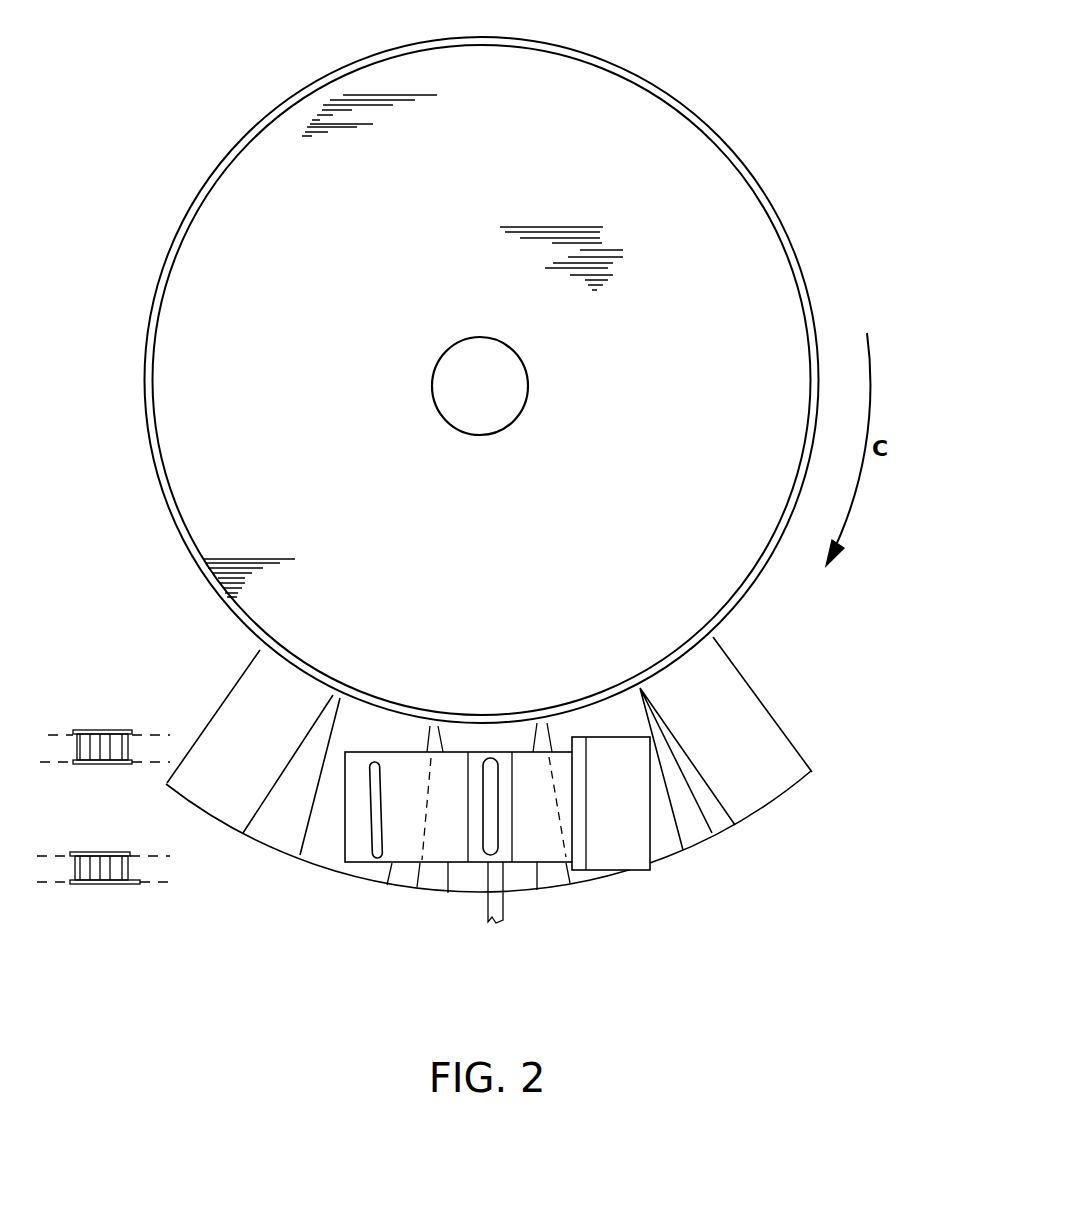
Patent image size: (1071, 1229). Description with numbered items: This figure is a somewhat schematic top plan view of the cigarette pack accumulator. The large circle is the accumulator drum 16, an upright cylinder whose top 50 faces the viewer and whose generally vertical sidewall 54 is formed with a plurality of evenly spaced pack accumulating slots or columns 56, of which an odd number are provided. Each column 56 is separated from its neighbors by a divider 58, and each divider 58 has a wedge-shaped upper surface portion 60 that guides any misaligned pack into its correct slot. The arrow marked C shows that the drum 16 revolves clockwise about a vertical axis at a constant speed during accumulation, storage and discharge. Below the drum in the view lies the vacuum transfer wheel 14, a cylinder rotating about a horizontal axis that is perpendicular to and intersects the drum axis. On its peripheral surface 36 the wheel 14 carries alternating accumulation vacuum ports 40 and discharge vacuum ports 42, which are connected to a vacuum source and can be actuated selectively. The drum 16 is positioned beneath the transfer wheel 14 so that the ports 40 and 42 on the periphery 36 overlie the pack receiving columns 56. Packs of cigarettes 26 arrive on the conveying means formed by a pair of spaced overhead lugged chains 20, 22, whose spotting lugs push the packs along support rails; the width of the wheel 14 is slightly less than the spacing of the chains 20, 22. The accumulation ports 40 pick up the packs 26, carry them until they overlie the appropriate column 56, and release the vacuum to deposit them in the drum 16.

The accumulator drum 16 is at (660, 66).
The top 50 is at (687, 187).
The pack accumulating slots or columns 56 is at (246, 731).
The divider 58 is at (288, 855).
The wedge-shaped upper surface portion 60 is at (287, 810).
The vacuum transfer wheel 14 is at (378, 864).
The accumulation vacuum port 40 is at (372, 823).
The discharge vacuum port 42 is at (493, 827).
The peripheral surface 36 is at (543, 845).
The packs of cigarettes 26 is at (633, 847).
The sidewall 54 is at (722, 830).
The lugged chain 22 is at (93, 730).
The lugged chain 20 is at (90, 852).